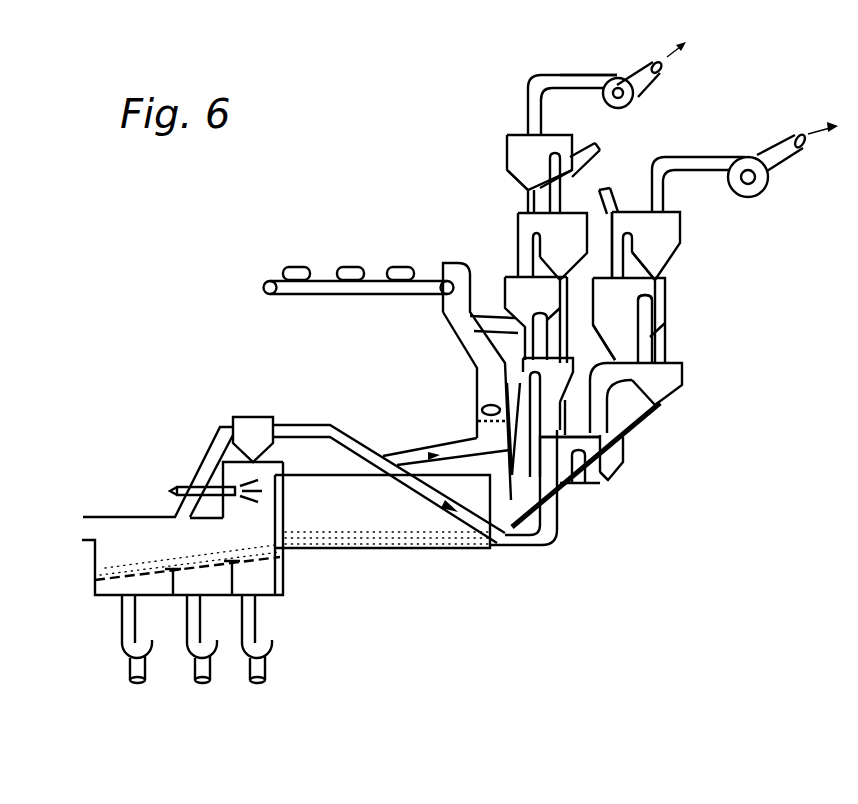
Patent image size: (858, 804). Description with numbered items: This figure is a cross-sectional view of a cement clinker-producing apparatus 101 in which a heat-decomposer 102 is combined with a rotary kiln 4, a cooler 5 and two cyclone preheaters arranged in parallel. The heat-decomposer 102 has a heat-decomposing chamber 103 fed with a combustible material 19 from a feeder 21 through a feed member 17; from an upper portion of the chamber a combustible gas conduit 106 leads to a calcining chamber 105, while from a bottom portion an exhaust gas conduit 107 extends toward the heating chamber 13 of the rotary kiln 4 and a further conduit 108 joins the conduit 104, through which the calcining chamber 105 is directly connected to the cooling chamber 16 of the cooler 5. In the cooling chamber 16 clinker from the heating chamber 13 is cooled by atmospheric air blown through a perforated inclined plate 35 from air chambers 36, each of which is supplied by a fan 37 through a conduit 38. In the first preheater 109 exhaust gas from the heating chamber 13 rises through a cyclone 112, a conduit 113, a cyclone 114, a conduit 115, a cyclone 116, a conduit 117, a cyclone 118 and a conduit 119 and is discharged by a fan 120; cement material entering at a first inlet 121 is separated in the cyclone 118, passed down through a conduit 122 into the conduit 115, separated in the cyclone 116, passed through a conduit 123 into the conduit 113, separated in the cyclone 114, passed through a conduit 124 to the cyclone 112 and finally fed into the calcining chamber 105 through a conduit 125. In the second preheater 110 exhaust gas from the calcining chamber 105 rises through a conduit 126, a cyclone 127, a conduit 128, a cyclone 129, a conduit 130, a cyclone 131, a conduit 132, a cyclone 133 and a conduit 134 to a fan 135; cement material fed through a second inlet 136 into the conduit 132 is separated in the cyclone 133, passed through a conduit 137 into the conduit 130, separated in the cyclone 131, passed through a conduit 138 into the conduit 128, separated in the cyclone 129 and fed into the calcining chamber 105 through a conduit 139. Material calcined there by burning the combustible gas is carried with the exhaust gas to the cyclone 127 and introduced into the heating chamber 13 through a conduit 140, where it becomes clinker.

The rotary kiln 4 is at (353, 572).
The cooler 5 is at (129, 484).
The heating chamber 13 is at (397, 541).
The cooling chamber 16 is at (113, 520).
The injector nozzle 17 is at (180, 490).
The combustible material 19 is at (362, 267).
The feeder 21 is at (323, 296).
The inclined plate 35 is at (118, 580).
The air chamber 36 is at (188, 587).
The fan 37 is at (220, 647).
The conduit 38 is at (202, 612).
The apparatus 101 is at (243, 211).
The heat-decomposer 102 is at (462, 380).
The heat-decomposing chamber 103 is at (483, 390).
The conduit 104 is at (525, 548).
The calcining chamber 105 is at (617, 462).
The combustible gas conduit 106 is at (600, 446).
The exhaust gas conduit 107 is at (500, 478).
The conduit 108 is at (417, 450).
The first preheater 109 is at (484, 145).
The second preheater 110 is at (700, 269).
The cyclone 112 is at (560, 357).
The conduit 113 is at (470, 317).
The cyclone 114 is at (530, 279).
The conduit 115 is at (555, 238).
The cyclone 116 is at (553, 219).
The conduit 117 is at (564, 152).
The cyclone 118 is at (522, 133).
The conduit 119 is at (576, 76).
The fan 120 is at (645, 96).
The first inlet 121 is at (632, 126).
The conduit 122 is at (527, 190).
The conduit 123 is at (625, 262).
The conduit 124 is at (515, 332).
The conduit 125 is at (655, 400).
The conduit 126 is at (600, 470).
The cyclone 127 is at (612, 483).
The conduit 128 is at (605, 425).
The cyclone 129 is at (668, 378).
The conduit 130 is at (620, 315).
The cyclone 131 is at (637, 333).
The conduit 132 is at (612, 246).
The cyclone 133 is at (678, 213).
The conduit 134 is at (698, 158).
The fan 135 is at (748, 160).
The second inlet 136 is at (600, 175).
The conduit 137 is at (666, 287).
The conduit 138 is at (617, 353).
The conduit 139 is at (620, 465).
The conduit 140 is at (575, 490).